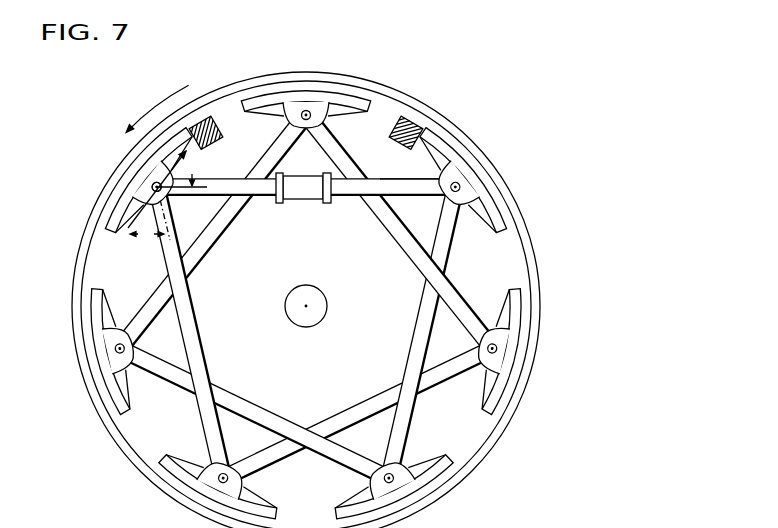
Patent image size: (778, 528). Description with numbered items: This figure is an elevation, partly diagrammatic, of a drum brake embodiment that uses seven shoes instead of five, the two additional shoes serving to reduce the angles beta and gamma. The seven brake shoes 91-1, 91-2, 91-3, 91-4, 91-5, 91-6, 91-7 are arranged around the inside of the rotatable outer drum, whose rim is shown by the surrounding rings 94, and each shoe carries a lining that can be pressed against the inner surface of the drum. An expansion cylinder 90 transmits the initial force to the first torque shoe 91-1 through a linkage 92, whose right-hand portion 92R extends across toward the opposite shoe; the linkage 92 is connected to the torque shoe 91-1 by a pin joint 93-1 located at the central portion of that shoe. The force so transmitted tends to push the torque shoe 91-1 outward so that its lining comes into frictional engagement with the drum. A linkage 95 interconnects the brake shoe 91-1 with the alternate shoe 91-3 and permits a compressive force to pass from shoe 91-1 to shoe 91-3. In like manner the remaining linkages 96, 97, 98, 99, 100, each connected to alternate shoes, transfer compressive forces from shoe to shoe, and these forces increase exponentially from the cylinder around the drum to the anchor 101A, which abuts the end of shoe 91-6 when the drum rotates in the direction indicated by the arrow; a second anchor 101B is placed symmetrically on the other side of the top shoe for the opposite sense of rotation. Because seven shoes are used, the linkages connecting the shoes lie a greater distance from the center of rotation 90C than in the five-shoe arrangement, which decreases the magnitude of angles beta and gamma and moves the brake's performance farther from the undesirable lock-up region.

The expansion cylinder 90 is at (303, 194).
The center of rotation 90C is at (316, 296).
The first torque shoe 91-1 is at (110, 212).
The brake shoe 91-2 is at (128, 385).
The alternate shoe 91-3 is at (254, 495).
The brake shoe 91-4 is at (418, 463).
The brake shoe 91-5 is at (485, 375).
The brake shoe 91-6 is at (463, 205).
The brake shoe 91-7 is at (340, 110).
The linkage 92 is at (262, 198).
The right portion of link bar 92R is at (419, 191).
The pin joint 93-1 is at (150, 185).
The drum ring 94 is at (88, 224).
The linkage 95 is at (198, 356).
The linkage 96 is at (358, 398).
The linkage 97 is at (407, 248).
The linkage 98 is at (207, 247).
The linkage 99 is at (263, 413).
The linkage 100 is at (418, 320).
The anchor 101A is at (415, 126).
The stop 101B is at (197, 114).